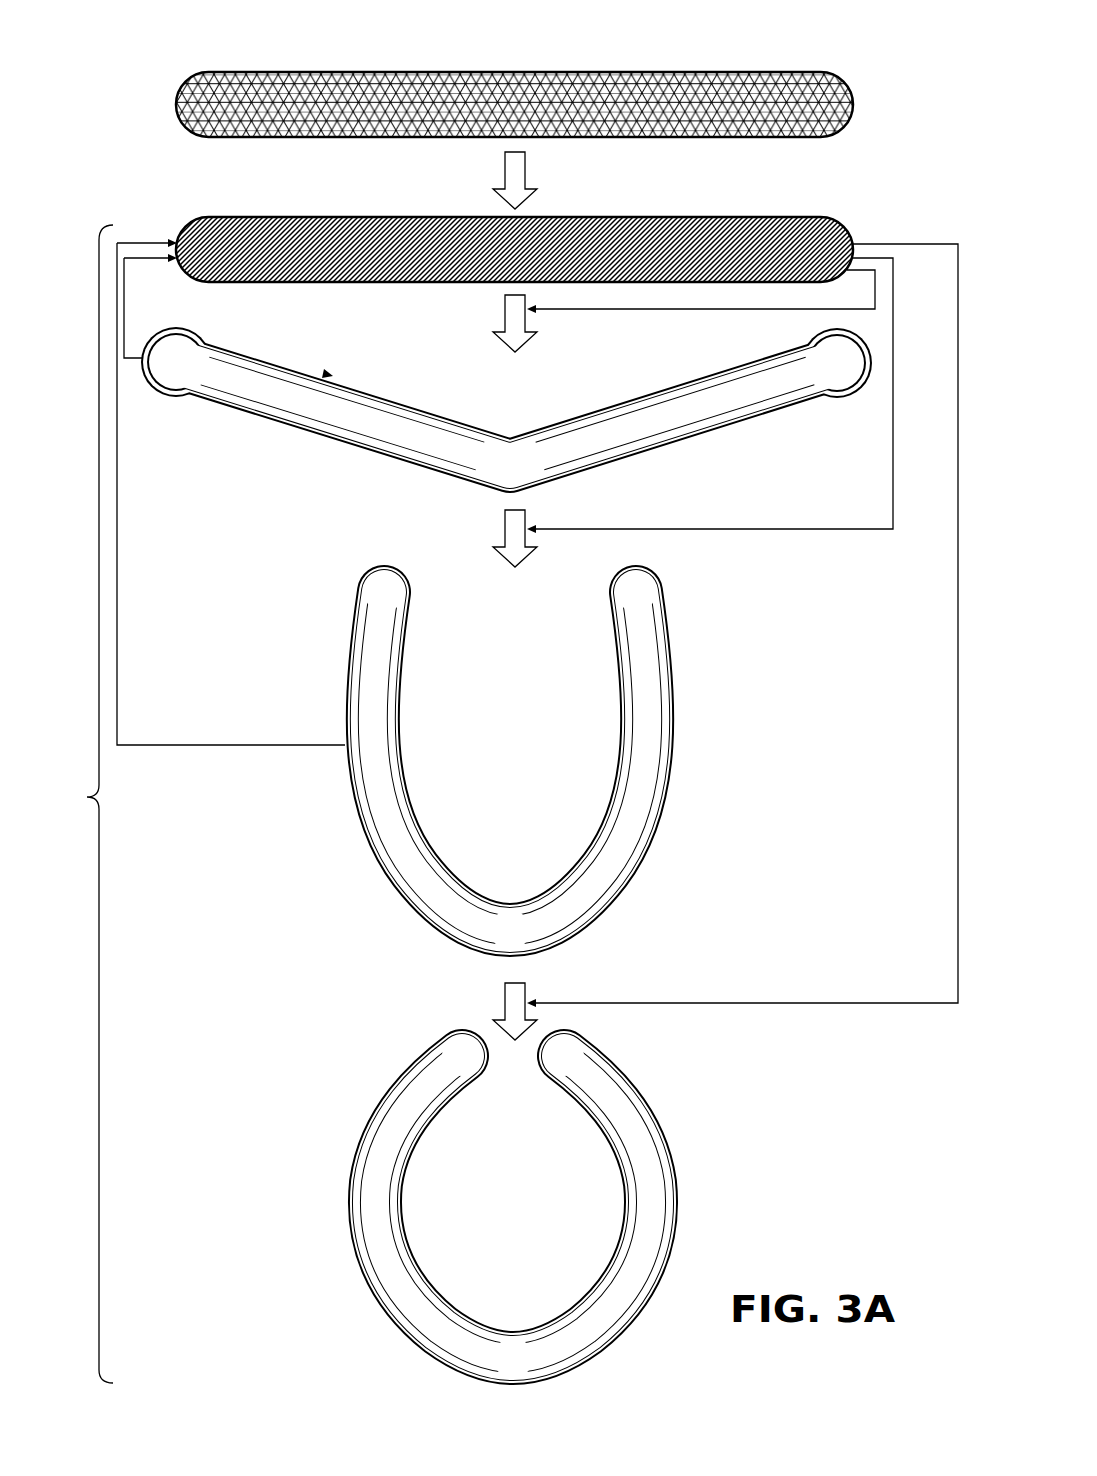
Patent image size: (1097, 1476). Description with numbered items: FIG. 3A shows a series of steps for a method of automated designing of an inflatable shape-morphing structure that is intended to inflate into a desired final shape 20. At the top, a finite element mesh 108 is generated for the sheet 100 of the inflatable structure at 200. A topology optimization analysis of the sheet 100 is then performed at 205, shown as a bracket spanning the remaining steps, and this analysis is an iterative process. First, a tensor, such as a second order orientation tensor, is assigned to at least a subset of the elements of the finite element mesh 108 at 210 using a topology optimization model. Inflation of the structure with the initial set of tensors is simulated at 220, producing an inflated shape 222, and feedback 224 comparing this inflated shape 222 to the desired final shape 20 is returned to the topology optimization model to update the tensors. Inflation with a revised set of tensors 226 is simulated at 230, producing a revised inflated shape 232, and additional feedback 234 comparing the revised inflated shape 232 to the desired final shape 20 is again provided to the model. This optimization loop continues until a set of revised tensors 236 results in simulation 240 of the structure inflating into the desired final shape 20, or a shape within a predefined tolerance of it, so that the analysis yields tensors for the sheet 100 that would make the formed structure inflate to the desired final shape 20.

The desired final shape 20 is at (652, 1073).
The sheet 100 is at (514, 75).
The finite element mesh 108 is at (466, 72).
The finite element mesh generation step 200 is at (569, 75).
The topology optimization analysis 205 is at (78, 804).
The tensor assignment step 210 is at (861, 197).
The inflation simulation step 220 is at (503, 322).
The inflated shape 222 is at (629, 393).
The feedback 224 is at (125, 316).
The revised set of tensors 226 is at (892, 491).
The second inflation simulation step 230 is at (503, 541).
The revised inflated shape 232 is at (679, 625).
The additional feedback 234 is at (117, 605).
The set of revised tensors 236 is at (957, 879).
The final inflation simulation 240 is at (503, 1011).